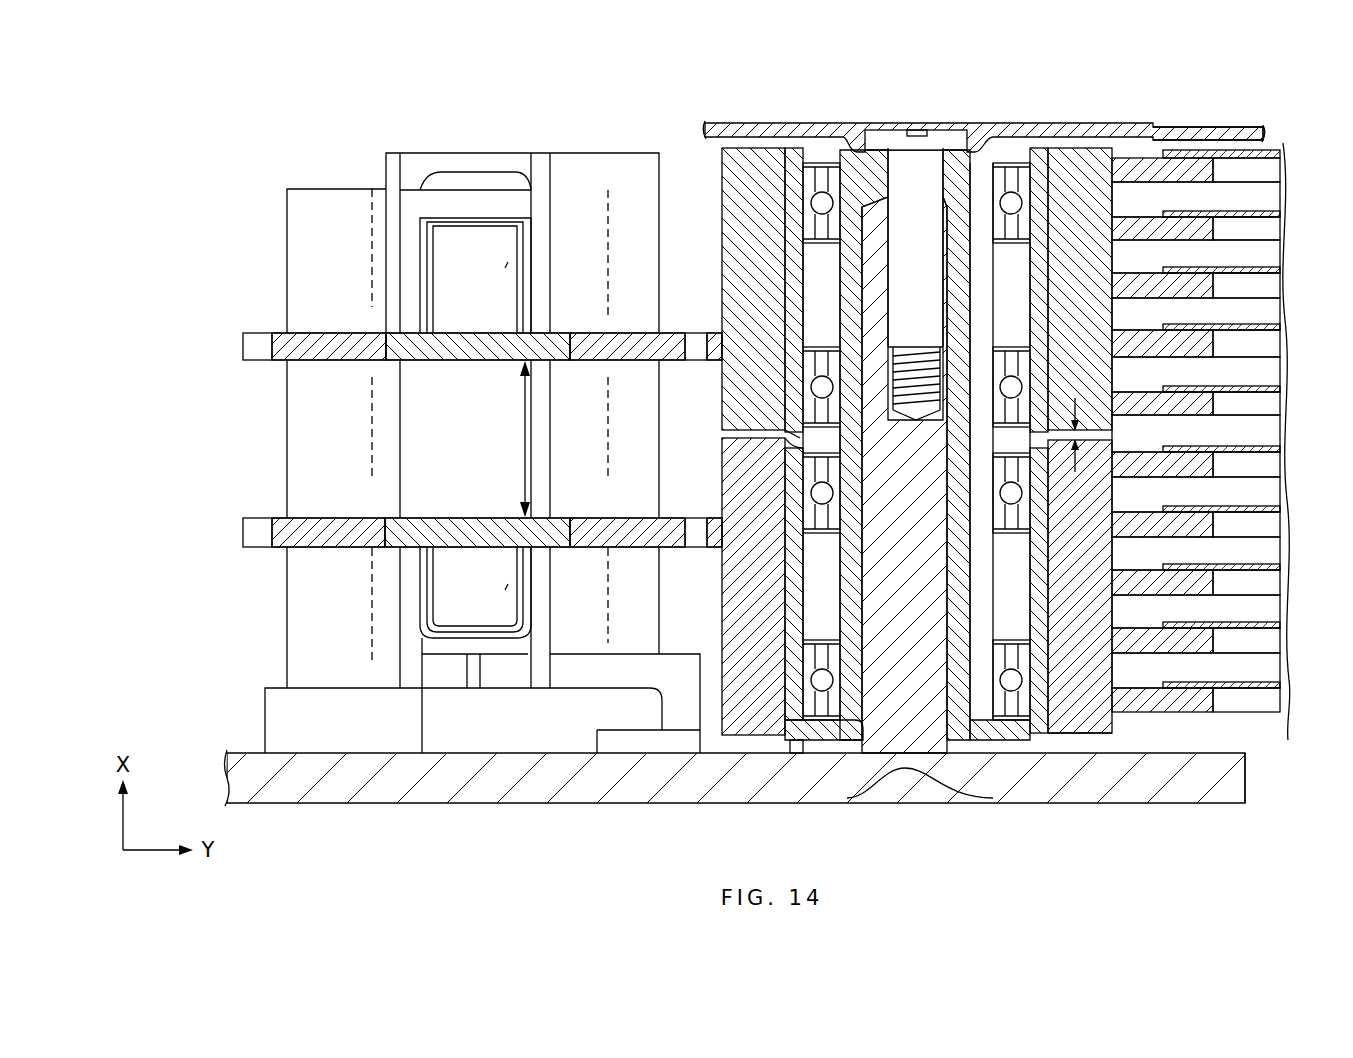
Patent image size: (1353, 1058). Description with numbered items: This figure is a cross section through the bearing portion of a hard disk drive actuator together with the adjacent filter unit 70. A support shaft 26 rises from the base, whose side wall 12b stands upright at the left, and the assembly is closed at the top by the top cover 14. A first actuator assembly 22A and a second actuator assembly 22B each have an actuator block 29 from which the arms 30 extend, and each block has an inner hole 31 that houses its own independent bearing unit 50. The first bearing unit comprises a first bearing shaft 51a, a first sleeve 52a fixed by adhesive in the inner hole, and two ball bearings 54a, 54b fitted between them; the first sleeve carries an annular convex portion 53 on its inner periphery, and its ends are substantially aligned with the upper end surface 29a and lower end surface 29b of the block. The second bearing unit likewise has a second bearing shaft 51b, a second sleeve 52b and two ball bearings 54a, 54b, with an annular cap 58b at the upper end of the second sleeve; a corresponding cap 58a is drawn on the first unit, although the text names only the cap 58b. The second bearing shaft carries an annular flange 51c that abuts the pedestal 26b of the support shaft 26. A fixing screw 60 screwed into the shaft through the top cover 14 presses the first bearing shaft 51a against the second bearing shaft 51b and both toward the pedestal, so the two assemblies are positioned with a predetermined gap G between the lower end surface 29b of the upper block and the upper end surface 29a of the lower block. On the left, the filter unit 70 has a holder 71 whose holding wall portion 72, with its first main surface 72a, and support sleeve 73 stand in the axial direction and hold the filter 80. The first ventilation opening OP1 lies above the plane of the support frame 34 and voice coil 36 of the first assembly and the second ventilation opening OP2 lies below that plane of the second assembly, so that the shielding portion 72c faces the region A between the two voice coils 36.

The side wall 12b is at (1160, 790).
The top cover 14 is at (1233, 125).
The first actuator assembly 22A is at (1133, 104).
The second actuator assembly 22B is at (1256, 735).
The support shaft 26 is at (898, 762).
The pedestal 26b is at (795, 750).
The actuator block 29 is at (733, 170).
The upper end surface 29a is at (762, 445).
The lower end surface 29b is at (770, 430).
The arms 30 is at (1203, 230).
The inner hole 31 is at (1042, 170).
The support frame 34 is at (672, 342).
The voice coil 36 is at (330, 345).
The bearing unit 50 is at (770, 222).
The first bearing shaft 51a is at (850, 275).
The second bearing shaft 51b is at (850, 578).
The annular flange 51c is at (1010, 740).
The first sleeve 52a is at (1035, 322).
The second sleeve 52b is at (1040, 500).
The annular convex portion 53 is at (1040, 280).
The ball bearing 54a is at (810, 180).
The ball bearing 54b is at (810, 400).
The third bearing 58a is at (1000, 165).
The annular cap 58b is at (1000, 450).
The fixing screw 60 is at (882, 140).
The filter unit 70 is at (326, 176).
The holder 71 is at (296, 300).
The holding wall portion 72 is at (460, 398).
The first main surface 72a is at (420, 430).
The shielding portion 72c is at (460, 487).
The support sleeve 73 is at (300, 224).
The filter 80 is at (455, 255).
The first ventilation opening OP1 is at (508, 276).
The second ventilation opening OP2 is at (508, 598).
The region between two voice coils A is at (517, 439).
The gap G is at (1082, 409).